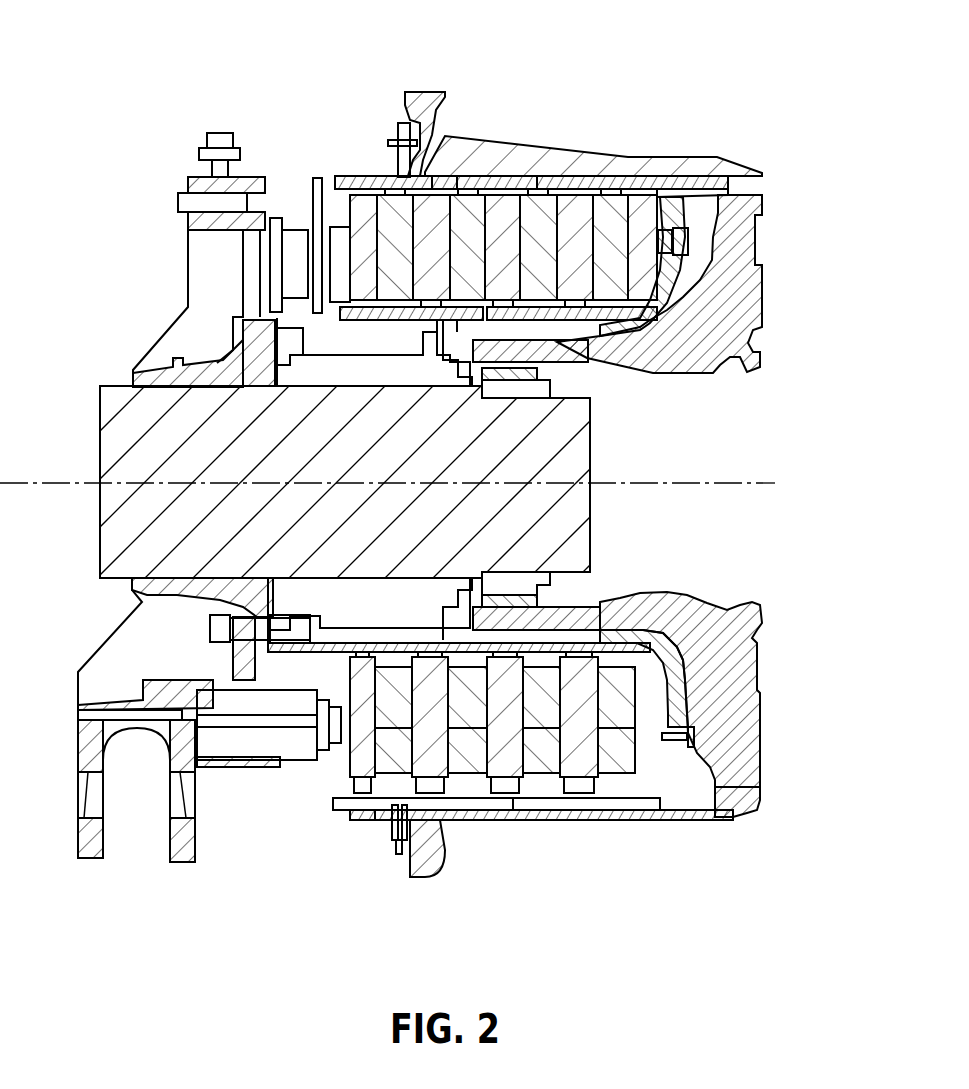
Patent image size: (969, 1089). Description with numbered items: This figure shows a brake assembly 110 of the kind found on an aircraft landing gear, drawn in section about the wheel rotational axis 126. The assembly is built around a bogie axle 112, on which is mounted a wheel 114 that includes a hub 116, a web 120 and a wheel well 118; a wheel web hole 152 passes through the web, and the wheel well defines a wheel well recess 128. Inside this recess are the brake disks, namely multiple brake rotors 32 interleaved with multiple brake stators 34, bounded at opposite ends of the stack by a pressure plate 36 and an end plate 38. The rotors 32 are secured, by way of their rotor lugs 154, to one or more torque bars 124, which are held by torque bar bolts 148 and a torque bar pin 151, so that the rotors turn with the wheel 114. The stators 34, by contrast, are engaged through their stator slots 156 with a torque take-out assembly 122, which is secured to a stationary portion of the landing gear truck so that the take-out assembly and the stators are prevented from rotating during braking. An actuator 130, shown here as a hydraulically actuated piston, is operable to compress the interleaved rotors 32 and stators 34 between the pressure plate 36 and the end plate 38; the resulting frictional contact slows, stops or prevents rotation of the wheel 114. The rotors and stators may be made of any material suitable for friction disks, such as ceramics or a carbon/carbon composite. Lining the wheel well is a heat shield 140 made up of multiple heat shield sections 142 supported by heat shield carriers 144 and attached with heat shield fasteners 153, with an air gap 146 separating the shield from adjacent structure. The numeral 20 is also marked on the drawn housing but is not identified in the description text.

The housing 20 is at (723, 261).
The brake rotors 32 is at (385, 263).
The brake stators 34 is at (421, 263).
The pressure plate 36 is at (353, 263).
The end plate 38 is at (632, 263).
The brake assembly 110 is at (800, 80).
The bogie axle 112 is at (70, 425).
The wheel 114 is at (617, 125).
The hub 116 is at (562, 352).
The wheel well 118 is at (750, 163).
The web 120 is at (737, 693).
The torque take-out assembly 122 is at (390, 340).
The torque bars 124 is at (350, 175).
The wheel rotational axis 126 is at (655, 481).
The wheel well recess 128 is at (703, 242).
The actuator 130 is at (250, 795).
The heat shield 140 is at (357, 838).
The heat shield sections 142 is at (537, 183).
The heat shield carriers 144 is at (410, 843).
The air gap 146 is at (432, 180).
The torque bar bolts 148 is at (403, 157).
The torque bar pin 151 is at (712, 208).
The wheel web hole 152 is at (765, 223).
The heat shield fasteners 153 is at (398, 853).
The rotor lugs 154 is at (457, 187).
The stator slots 156 is at (445, 333).